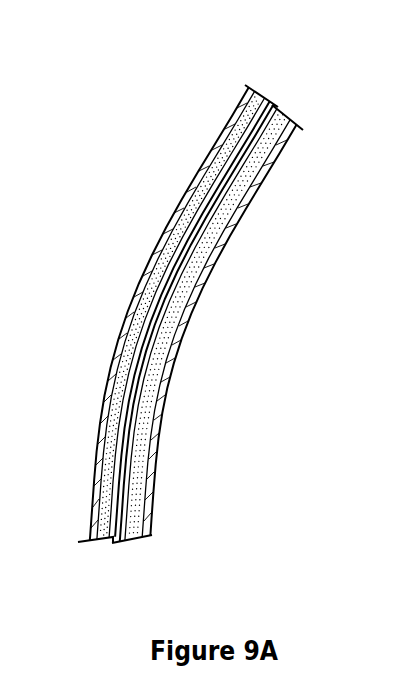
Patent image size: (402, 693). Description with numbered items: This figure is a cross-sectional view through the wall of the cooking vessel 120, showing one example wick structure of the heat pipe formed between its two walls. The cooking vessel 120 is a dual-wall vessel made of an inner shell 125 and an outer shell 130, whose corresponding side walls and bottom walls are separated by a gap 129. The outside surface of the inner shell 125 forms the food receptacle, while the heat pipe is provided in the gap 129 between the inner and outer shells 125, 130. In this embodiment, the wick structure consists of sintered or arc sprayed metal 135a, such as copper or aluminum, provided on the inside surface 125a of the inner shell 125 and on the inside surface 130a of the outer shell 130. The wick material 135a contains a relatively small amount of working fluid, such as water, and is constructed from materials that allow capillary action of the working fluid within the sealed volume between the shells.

The cooking vessel 120 is at (287, 66).
The inner shell 125 is at (212, 262).
The inside surface of inner shell 125a is at (175, 316).
The gap 129 is at (263, 128).
The outer shell 130 is at (205, 153).
The inside surface of outer shell 130a is at (152, 286).
The sintered or arc sprayed metal 135a is at (107, 434).